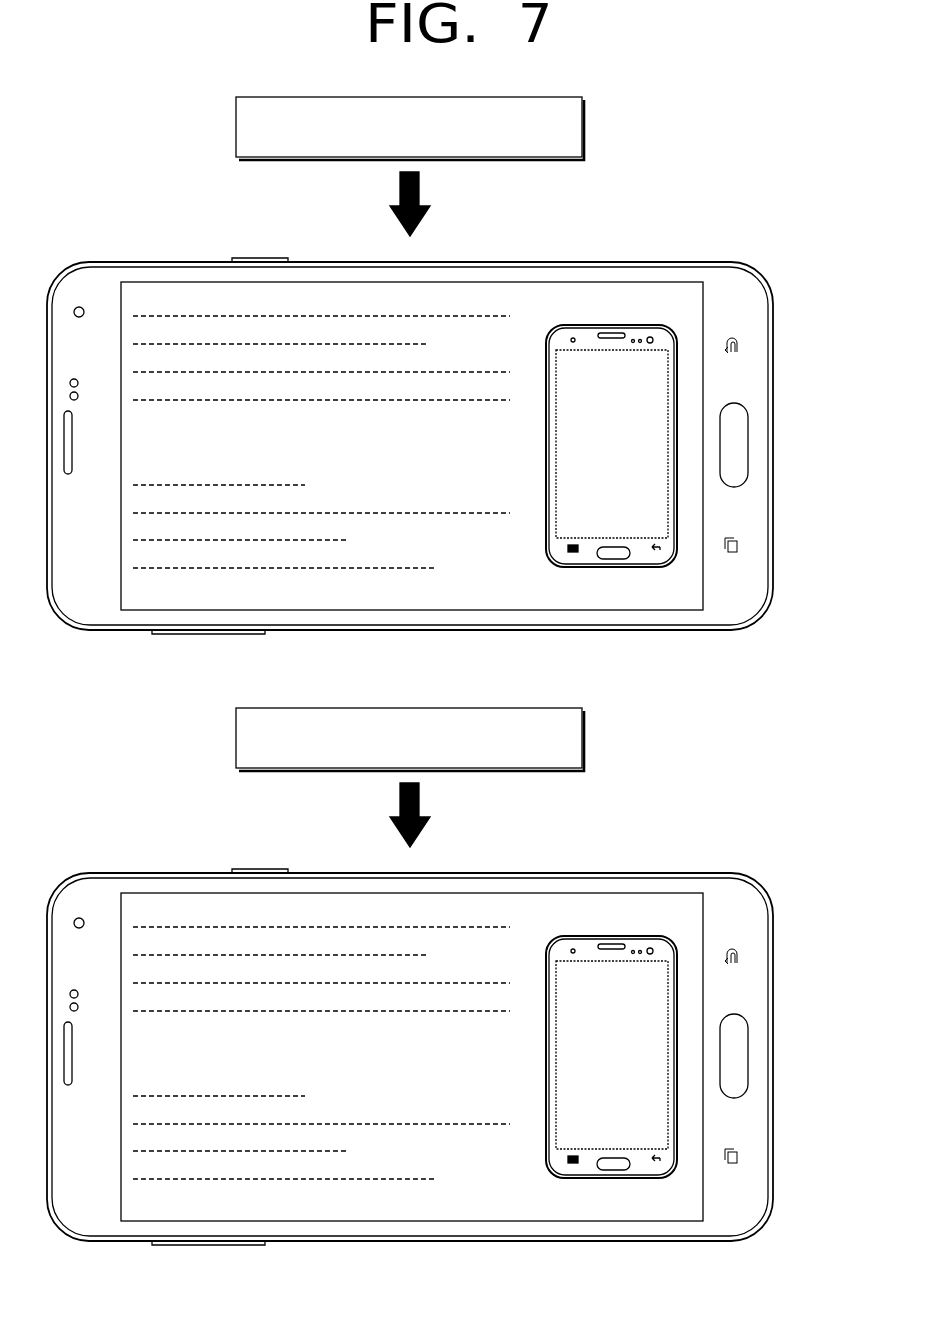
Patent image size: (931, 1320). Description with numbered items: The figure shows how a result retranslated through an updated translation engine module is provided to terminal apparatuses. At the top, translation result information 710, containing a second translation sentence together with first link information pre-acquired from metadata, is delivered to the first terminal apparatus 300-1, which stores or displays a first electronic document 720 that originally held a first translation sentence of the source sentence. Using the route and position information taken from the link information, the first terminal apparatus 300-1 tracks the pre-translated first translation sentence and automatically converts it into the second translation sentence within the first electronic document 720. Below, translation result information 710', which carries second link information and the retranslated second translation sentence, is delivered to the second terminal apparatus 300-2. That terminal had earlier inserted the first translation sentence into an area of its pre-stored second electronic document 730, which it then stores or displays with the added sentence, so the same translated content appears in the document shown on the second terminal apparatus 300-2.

The translation result information 710 is at (444, 128).
The first electronic document 720 is at (661, 282).
The first terminal apparatus 300-1 is at (773, 336).
The translation result information 710' is at (447, 739).
The second electronic document 730 is at (412, 1030).
The second terminal apparatus 300-2 is at (455, 1042).